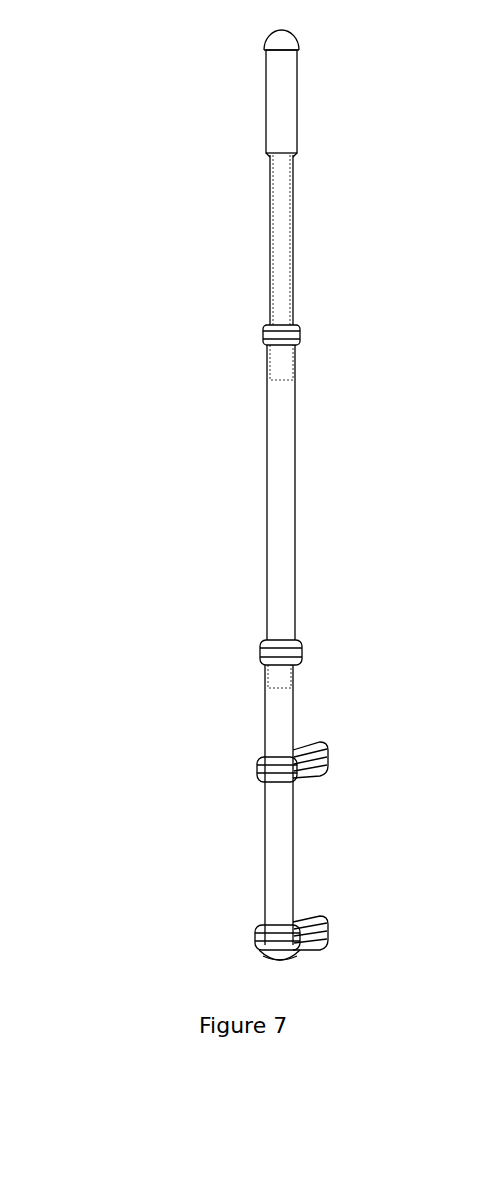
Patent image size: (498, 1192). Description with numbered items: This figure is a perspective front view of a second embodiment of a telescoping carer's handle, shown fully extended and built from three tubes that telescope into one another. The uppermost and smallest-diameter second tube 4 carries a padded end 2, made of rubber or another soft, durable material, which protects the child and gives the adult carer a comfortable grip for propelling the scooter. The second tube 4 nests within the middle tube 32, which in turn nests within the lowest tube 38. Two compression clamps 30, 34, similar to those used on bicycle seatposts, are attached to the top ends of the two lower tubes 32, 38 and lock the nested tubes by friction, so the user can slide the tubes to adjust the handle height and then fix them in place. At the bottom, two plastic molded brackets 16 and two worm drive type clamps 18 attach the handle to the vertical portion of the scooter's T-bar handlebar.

The padded end 2 is at (258, 36).
The second tube 4 is at (253, 203).
The compression clamp 30 is at (253, 335).
The tube 32 is at (253, 487).
The compression clamp 34 is at (245, 648).
The tube 38 is at (252, 715).
The worm drive type clamp 18 is at (248, 937).
The plastic molded bracket 16 is at (298, 778).